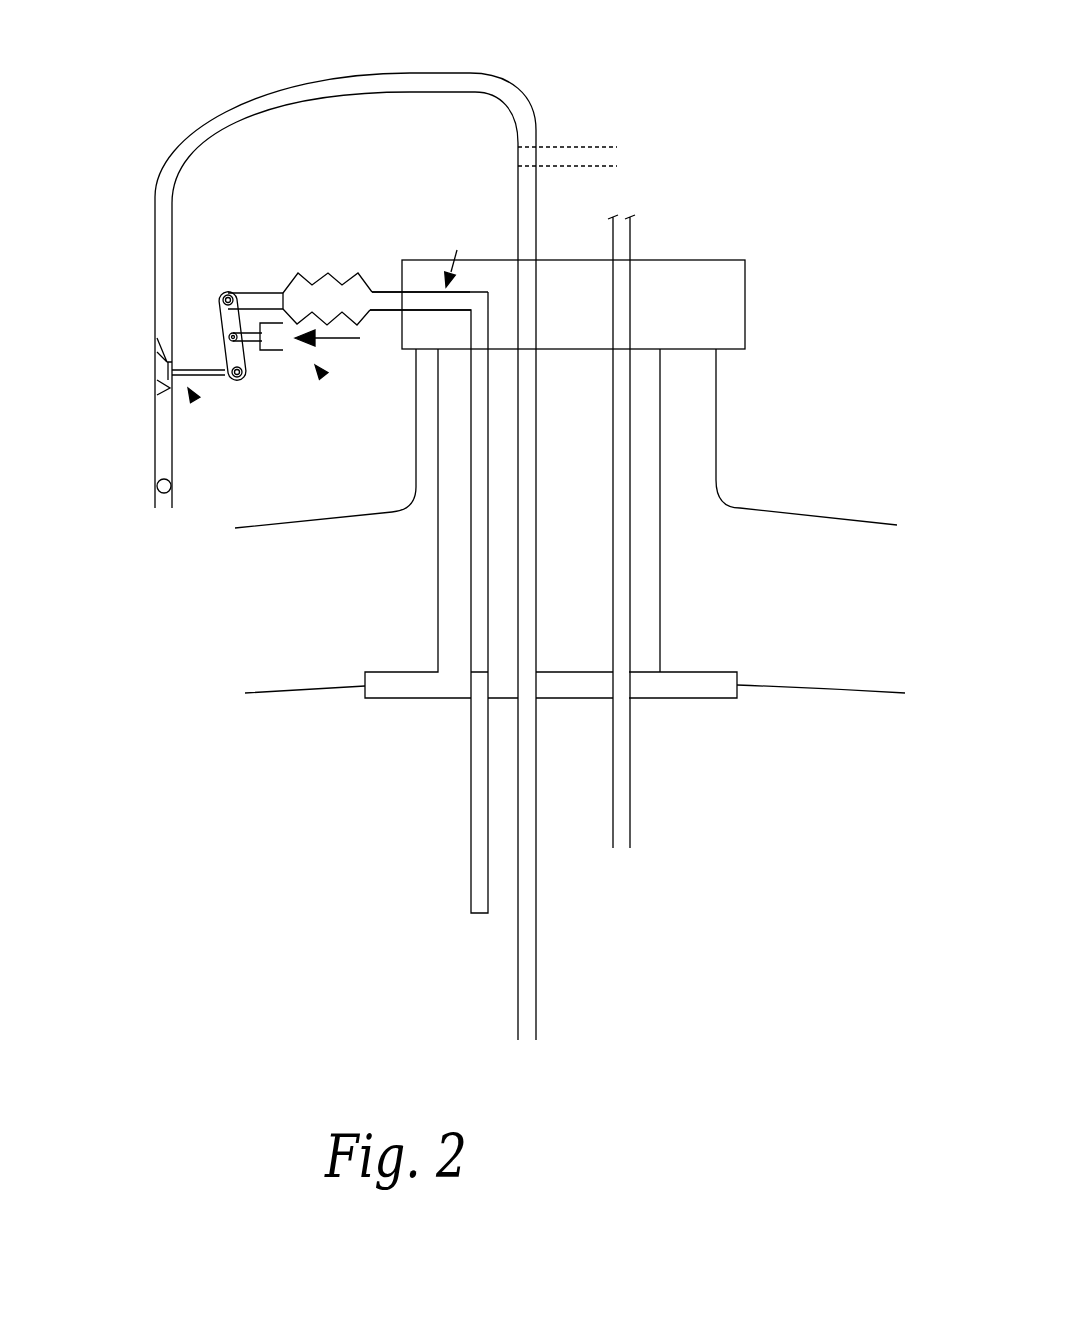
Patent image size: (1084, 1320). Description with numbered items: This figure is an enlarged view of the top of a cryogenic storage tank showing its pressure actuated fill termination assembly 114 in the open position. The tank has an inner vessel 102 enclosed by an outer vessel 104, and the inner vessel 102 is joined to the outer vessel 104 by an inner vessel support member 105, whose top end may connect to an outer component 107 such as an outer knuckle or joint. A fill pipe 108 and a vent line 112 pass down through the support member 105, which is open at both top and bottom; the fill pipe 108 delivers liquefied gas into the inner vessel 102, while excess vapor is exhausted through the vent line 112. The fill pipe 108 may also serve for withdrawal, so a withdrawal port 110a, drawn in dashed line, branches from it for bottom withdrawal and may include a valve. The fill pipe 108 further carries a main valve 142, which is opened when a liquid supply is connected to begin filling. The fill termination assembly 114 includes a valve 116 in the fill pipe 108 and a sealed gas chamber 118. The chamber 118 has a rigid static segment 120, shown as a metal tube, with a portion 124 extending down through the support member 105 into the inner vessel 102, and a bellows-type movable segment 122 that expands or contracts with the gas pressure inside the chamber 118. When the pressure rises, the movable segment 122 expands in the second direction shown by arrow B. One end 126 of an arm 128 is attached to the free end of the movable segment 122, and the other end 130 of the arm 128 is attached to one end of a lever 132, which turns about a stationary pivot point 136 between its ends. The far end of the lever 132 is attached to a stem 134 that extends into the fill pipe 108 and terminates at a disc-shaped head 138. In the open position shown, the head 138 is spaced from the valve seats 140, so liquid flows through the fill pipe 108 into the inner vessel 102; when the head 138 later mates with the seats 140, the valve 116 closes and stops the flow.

The inner vessel 102 is at (762, 682).
The outer vessel 104 is at (855, 518).
The inner vessel support member 105 is at (660, 548).
The outer component 107 is at (733, 307).
The fill pipe 108 is at (517, 97).
The withdrawal port 110a is at (580, 147).
The vent line 112 is at (630, 772).
The fill termination assembly 114 is at (327, 380).
The valve 116 is at (197, 403).
The chamber 118 is at (457, 250).
The static segment 120 is at (488, 292).
The movable segment 122 is at (337, 272).
The portion 124 is at (472, 795).
The end of arm 126 is at (283, 292).
The arm 128 is at (266, 292).
The other end of arm 130 is at (228, 293).
The lever 132 is at (228, 337).
The stem 134 is at (215, 378).
The pivot point 136 is at (253, 337).
The head 138 is at (168, 368).
The valve seats 140 is at (157, 335).
The main valve 142 is at (164, 493).
The second direction arrow B is at (338, 342).